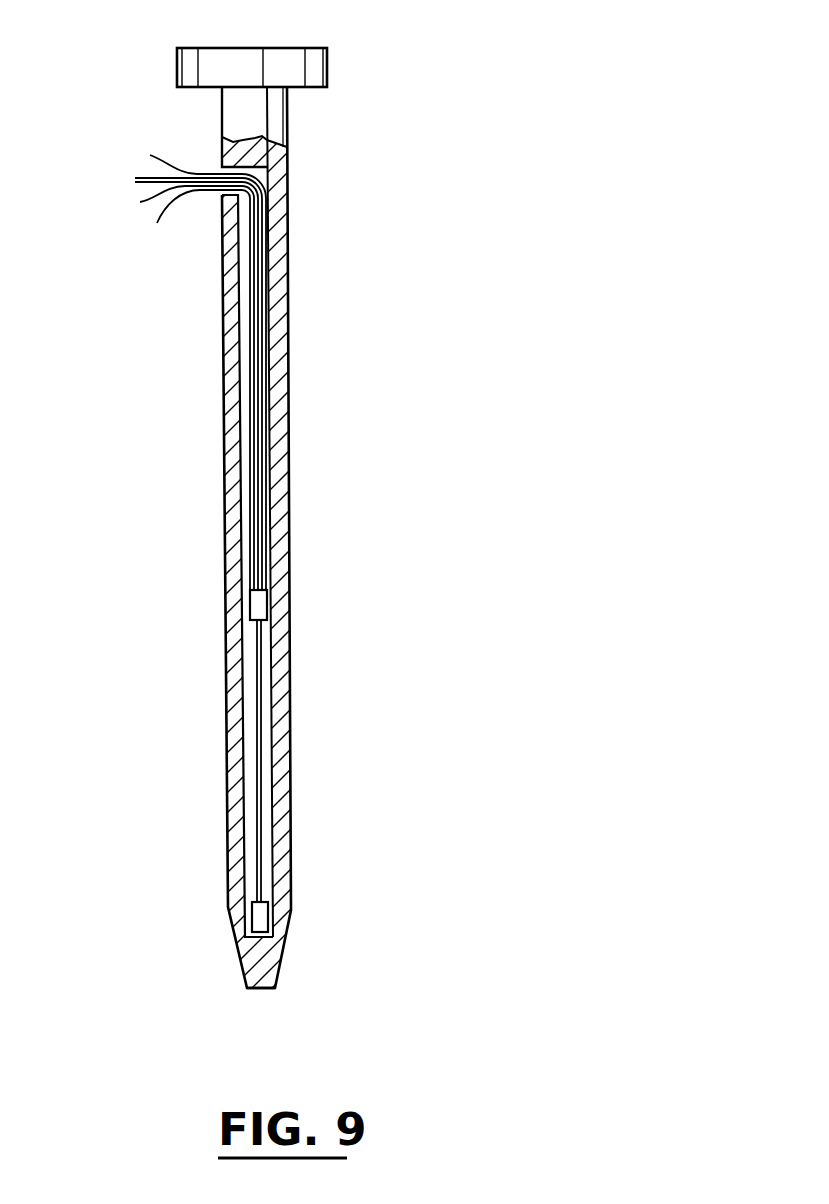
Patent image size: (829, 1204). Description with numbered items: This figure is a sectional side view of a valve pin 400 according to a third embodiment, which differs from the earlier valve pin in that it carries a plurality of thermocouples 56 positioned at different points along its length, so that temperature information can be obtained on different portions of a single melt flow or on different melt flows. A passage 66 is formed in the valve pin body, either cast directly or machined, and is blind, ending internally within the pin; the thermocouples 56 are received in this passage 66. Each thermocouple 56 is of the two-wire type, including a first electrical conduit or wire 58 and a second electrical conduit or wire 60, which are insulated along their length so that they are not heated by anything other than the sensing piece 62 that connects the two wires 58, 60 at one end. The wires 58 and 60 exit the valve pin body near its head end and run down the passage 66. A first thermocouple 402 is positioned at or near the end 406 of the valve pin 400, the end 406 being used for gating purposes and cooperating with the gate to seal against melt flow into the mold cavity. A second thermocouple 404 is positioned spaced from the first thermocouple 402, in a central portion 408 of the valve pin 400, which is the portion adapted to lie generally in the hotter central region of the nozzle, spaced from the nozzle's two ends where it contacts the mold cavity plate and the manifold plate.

The valve pin 400 is at (332, 122).
The central portion 408 is at (223, 528).
The end 406 is at (263, 990).
The passage 66 is at (268, 780).
The first thermocouple 402 is at (270, 873).
The second electrical conduit 60 is at (150, 156).
The first electrical conduit 58 is at (142, 184).
The thermocouple 56 is at (265, 497).
The second thermocouple 404 is at (268, 575).
The sensing piece 62 is at (270, 912).